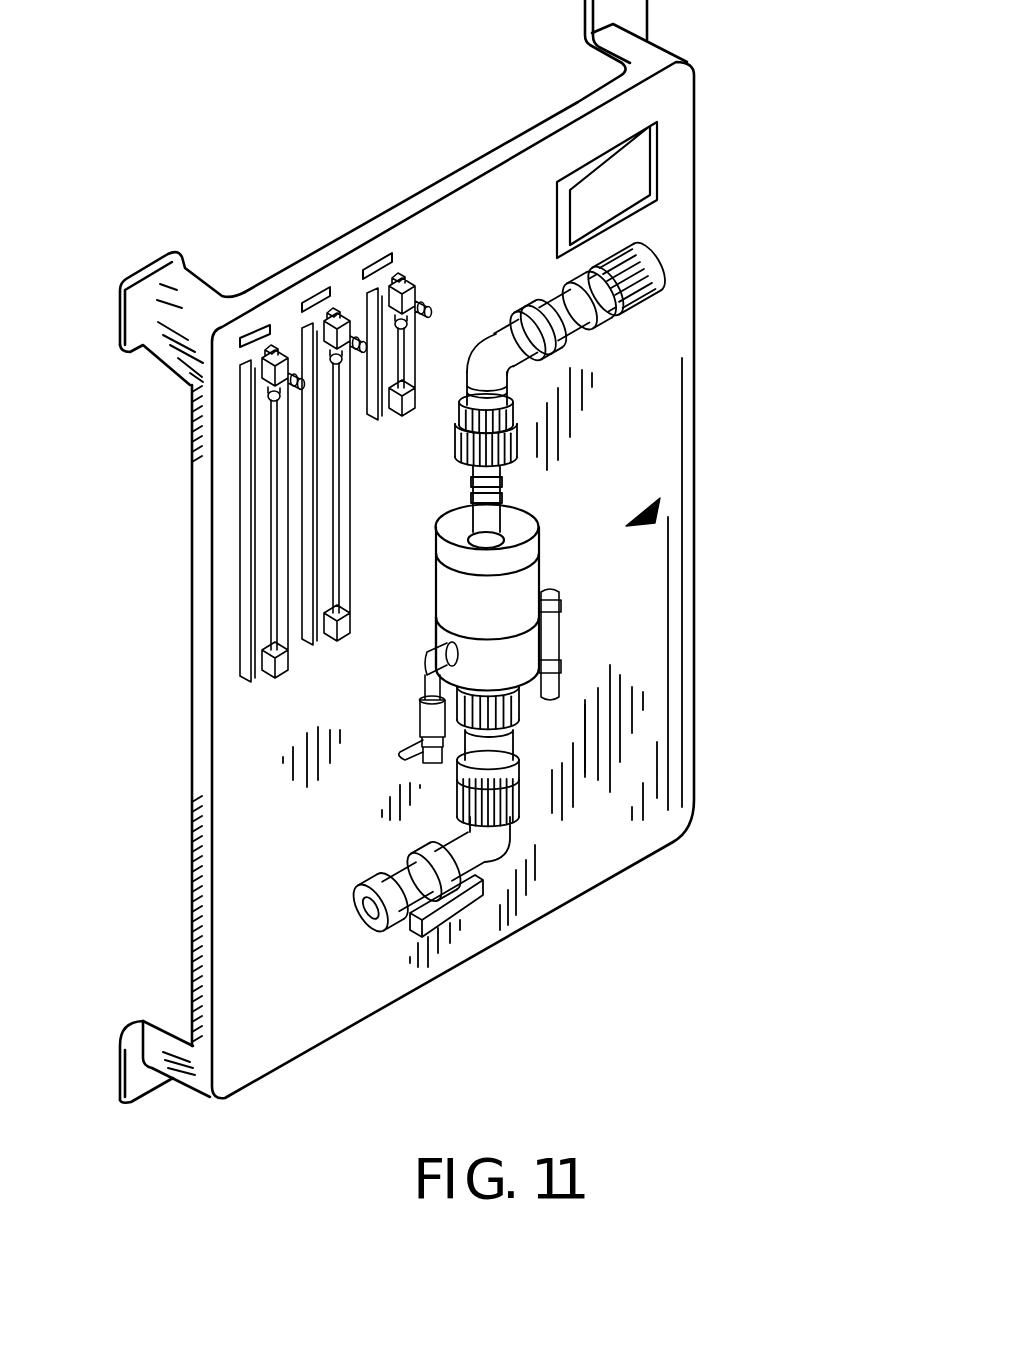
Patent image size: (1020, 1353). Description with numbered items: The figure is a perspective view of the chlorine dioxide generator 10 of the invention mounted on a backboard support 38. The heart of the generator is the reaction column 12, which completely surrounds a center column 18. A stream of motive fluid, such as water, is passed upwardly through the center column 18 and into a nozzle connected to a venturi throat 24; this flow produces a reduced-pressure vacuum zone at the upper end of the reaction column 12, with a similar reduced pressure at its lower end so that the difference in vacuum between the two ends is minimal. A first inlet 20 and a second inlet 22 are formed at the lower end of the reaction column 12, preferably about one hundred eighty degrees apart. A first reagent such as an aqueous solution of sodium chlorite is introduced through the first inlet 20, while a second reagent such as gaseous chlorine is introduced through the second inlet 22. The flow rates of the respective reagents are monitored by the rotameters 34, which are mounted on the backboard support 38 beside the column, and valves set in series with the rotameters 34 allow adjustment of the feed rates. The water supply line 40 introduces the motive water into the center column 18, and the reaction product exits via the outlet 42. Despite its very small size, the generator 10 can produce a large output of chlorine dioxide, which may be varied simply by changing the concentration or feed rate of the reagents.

The generator 10 is at (667, 505).
The reaction column 12 is at (530, 658).
The center column 18 is at (515, 700).
The first inlet 20 is at (425, 663).
The second inlet 22 is at (548, 597).
The venturi throat 24 is at (510, 493).
The rotameters 34 is at (310, 362).
The backboard support 38 is at (683, 307).
The water supply line 40 is at (498, 838).
The outlet 42 is at (630, 247).